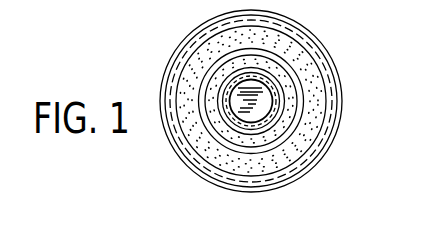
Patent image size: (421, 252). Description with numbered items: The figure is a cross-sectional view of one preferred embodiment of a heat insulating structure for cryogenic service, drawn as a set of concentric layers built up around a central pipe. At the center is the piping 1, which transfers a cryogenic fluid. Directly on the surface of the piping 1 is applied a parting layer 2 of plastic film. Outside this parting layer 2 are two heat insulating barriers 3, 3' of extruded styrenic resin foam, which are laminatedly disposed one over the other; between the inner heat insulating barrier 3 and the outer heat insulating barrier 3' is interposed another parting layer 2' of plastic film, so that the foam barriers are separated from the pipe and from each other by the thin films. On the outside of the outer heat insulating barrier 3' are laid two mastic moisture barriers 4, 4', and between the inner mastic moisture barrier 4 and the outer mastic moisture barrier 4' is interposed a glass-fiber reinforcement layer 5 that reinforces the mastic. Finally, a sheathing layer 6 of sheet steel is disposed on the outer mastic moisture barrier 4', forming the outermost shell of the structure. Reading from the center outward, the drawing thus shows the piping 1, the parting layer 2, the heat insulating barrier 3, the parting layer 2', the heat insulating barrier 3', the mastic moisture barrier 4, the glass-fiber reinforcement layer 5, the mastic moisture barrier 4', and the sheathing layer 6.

The piping 1 is at (272, 74).
The parting layer 2 is at (295, 87).
The heat insulating barrier 3 is at (297, 101).
The parting layer 2' is at (294, 101).
The heat insulating barrier 3' is at (290, 101).
The mastic moisture barrier 4 is at (264, 105).
The mastic moisture barrier 4' is at (251, 118).
The glass-fiber reinforcement layer 5 is at (299, 172).
The sheathing layer 6 is at (269, 191).